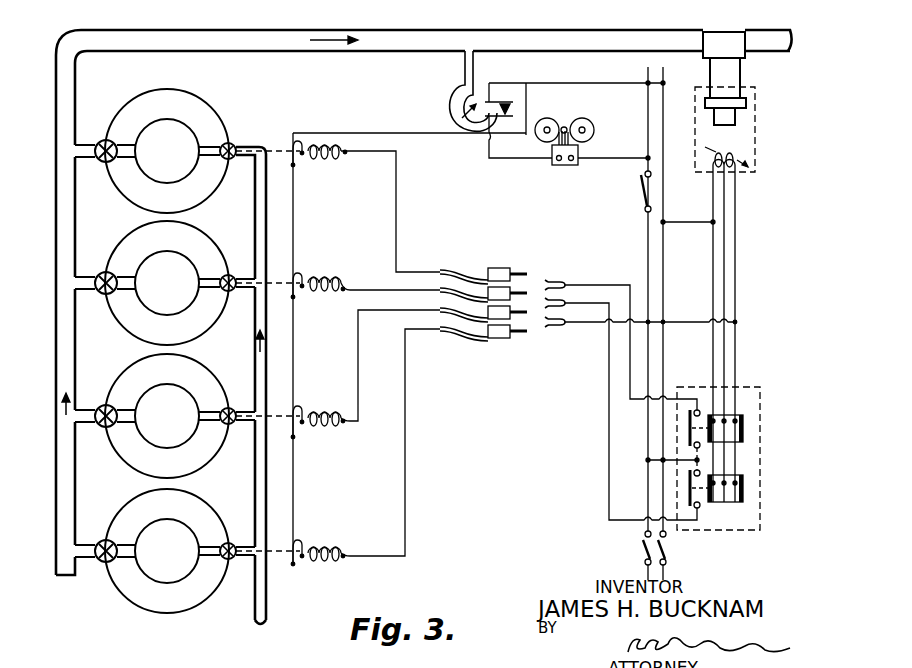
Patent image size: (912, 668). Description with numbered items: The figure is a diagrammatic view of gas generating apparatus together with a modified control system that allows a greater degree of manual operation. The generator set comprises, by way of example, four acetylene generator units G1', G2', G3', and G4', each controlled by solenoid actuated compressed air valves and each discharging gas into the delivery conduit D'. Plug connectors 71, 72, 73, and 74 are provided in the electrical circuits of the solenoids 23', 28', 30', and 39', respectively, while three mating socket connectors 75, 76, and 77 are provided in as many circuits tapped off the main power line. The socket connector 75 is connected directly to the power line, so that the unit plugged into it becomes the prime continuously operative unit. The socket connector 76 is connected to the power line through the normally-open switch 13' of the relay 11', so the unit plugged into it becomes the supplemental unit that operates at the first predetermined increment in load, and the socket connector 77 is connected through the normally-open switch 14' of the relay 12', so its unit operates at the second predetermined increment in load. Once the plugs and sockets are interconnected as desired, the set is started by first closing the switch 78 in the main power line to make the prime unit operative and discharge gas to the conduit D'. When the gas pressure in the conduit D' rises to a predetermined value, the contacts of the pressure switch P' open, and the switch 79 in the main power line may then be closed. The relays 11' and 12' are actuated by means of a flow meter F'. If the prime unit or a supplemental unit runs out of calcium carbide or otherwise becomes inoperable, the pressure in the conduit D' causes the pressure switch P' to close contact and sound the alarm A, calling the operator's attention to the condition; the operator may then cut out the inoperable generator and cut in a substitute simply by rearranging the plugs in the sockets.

The conduit D' is at (407, 327).
The acetylene generator unit G4' is at (155, 151).
The acetylene generator unit G3' is at (165, 283).
The acetylene generator unit G2' is at (165, 416).
The acetylene generator unit G1' is at (165, 551).
The solenoid 39' is at (338, 206).
The solenoid 30' is at (338, 296).
The solenoid 28' is at (338, 384).
The solenoid 23' is at (338, 461).
The plug connector 74 is at (501, 275).
The plug connector 73 is at (508, 297).
The plug connector 72 is at (508, 317).
The plug connector 71 is at (504, 335).
The socket connector 77 is at (552, 281).
The socket connector 76 is at (562, 304).
The socket connector 75 is at (553, 328).
The pressure switch P' is at (536, 104).
The alarm A is at (595, 128).
The switch 79 is at (640, 192).
The flow meter F' is at (740, 267).
The relay 12' is at (750, 428).
The relay 11' is at (725, 503).
The normally-open switch 14' is at (694, 415).
The normally-open switch 13' is at (695, 515).
The switch 78 is at (641, 549).